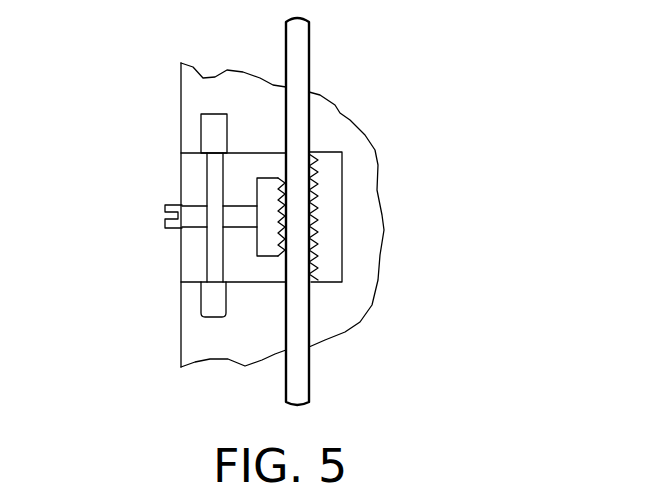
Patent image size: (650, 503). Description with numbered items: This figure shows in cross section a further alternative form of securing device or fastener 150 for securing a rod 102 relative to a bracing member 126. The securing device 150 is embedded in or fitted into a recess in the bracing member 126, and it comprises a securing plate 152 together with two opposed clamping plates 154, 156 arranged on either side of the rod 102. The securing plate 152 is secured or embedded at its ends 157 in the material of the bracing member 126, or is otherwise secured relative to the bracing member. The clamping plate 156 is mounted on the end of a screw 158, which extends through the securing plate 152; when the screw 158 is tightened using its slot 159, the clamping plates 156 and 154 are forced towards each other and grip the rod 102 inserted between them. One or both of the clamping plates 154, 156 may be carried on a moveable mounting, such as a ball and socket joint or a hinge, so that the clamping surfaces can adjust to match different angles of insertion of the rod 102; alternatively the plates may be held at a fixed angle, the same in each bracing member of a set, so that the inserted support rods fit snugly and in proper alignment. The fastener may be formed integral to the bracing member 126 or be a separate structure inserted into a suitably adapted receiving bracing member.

The rod 102 is at (312, 30).
The bracing member 126 is at (368, 245).
The securing device 150 is at (165, 262).
The securing plate 152 is at (213, 163).
The clamping plate 154 is at (328, 190).
The clamping plate 156 is at (270, 190).
The ends 157 is at (213, 129).
The screw 158 is at (172, 229).
The slot 159 is at (163, 215).